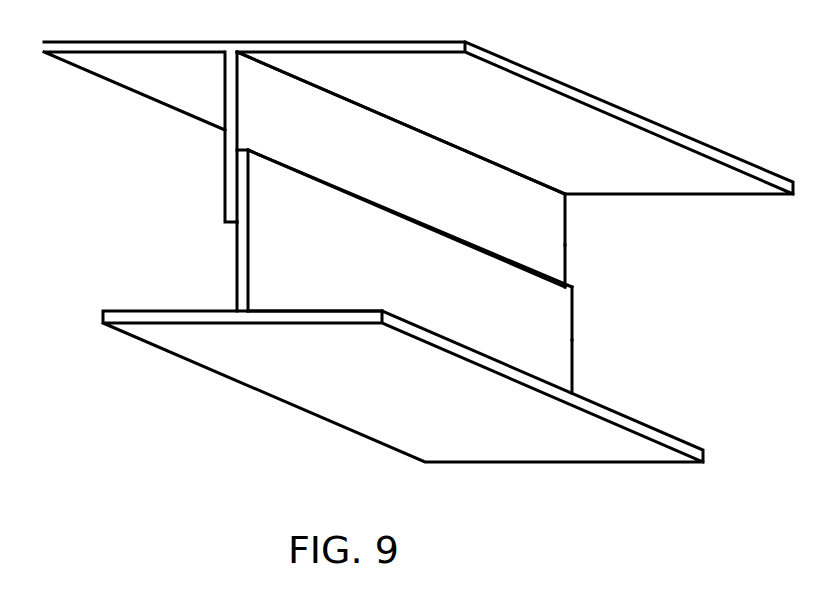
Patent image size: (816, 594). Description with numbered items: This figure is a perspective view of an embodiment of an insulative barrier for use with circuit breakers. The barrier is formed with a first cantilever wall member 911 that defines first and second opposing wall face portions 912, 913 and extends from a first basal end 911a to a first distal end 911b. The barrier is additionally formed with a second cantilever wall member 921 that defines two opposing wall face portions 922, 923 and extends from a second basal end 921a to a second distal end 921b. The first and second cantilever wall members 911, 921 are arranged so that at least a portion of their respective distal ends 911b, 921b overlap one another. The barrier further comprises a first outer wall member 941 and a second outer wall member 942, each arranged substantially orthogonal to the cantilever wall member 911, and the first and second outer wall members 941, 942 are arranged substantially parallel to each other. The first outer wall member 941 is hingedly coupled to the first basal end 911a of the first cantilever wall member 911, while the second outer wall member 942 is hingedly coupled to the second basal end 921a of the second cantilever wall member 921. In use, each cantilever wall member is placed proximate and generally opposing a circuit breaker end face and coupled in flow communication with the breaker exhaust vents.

The first cantilever wall member 911 is at (417, 183).
The first basal end 911a is at (555, 225).
The first distal end 911b is at (232, 192).
The first wall face portion 912 is at (225, 152).
The second wall face portion 913 is at (555, 262).
The second cantilever wall member 921 is at (360, 268).
The second basal end 921a is at (242, 290).
The second distal end 921b is at (563, 295).
The wall face portion 922 is at (237, 250).
The wall face portion 923 is at (555, 362).
The first outer wall member 941 is at (592, 155).
The second outer wall member 942 is at (407, 408).